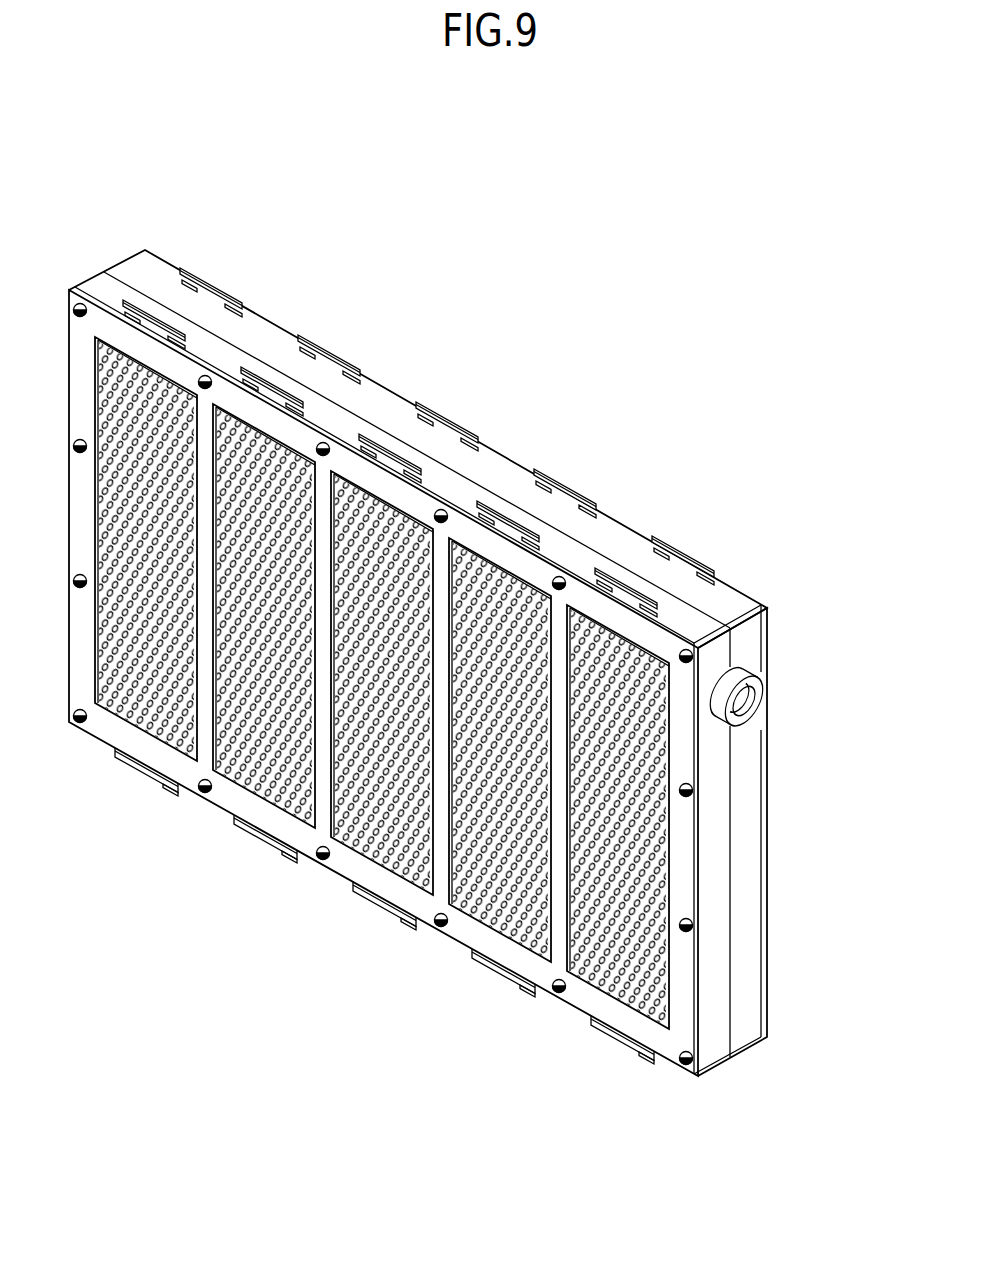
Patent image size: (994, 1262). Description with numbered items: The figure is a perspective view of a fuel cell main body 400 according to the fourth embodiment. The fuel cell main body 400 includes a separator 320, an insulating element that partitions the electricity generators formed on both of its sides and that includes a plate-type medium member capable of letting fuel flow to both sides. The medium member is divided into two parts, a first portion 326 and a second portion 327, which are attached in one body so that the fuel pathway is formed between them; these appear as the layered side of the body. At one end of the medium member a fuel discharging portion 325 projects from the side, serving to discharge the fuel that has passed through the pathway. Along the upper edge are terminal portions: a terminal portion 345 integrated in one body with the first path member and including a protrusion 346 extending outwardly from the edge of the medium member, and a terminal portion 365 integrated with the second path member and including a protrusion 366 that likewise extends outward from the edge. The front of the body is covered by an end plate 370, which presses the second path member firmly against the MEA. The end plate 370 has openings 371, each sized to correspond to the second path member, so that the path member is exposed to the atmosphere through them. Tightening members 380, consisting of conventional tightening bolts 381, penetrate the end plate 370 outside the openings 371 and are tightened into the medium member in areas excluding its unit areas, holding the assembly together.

The fuel cell main body 400 is at (638, 310).
The separator 320 is at (730, 1057).
The fuel discharging portion 325 is at (763, 687).
The first portion 326 is at (715, 1067).
The second portion 327 is at (743, 1038).
The terminal portion 345 is at (152, 316).
The protrusion 346 is at (211, 292).
The terminal portion 365 is at (265, 384).
The protrusion 366 is at (329, 359).
The end plate 370 is at (448, 935).
The opening 371 is at (325, 866).
The tightening member 380 is at (204, 792).
The tightening bolt 381 is at (80, 724).